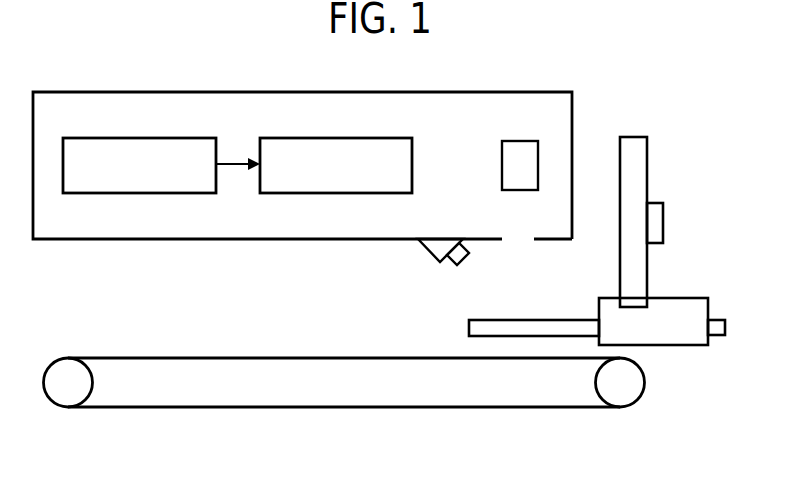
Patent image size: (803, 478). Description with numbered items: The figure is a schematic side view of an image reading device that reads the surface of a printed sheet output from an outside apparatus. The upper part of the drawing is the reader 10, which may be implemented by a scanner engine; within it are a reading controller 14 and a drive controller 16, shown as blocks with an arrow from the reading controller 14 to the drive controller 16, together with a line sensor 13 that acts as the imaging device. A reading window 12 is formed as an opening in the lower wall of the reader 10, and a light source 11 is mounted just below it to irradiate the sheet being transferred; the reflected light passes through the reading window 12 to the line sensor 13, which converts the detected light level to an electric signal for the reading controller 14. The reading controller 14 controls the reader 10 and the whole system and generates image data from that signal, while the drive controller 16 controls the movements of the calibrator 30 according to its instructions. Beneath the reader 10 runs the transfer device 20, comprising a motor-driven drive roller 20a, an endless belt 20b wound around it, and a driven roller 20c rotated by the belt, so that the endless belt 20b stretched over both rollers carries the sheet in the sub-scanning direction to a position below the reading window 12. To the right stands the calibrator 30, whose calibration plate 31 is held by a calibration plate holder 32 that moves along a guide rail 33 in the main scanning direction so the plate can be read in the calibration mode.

The reader 10 is at (552, 91).
The light source 11 is at (426, 250).
The reading window 12 is at (518, 240).
The line sensor 13 is at (517, 141).
The reading controller 14 is at (183, 138).
The drive controller 16 is at (378, 138).
The transfer device 20 is at (344, 390).
The drive roller 20a is at (597, 381).
The endless belt 20b is at (240, 358).
The driven roller 20c is at (93, 383).
The calibrator 30 is at (636, 128).
The calibration plate 31 is at (509, 320).
The calibration plate holder 32 is at (678, 298).
The guide rail 33 is at (655, 203).